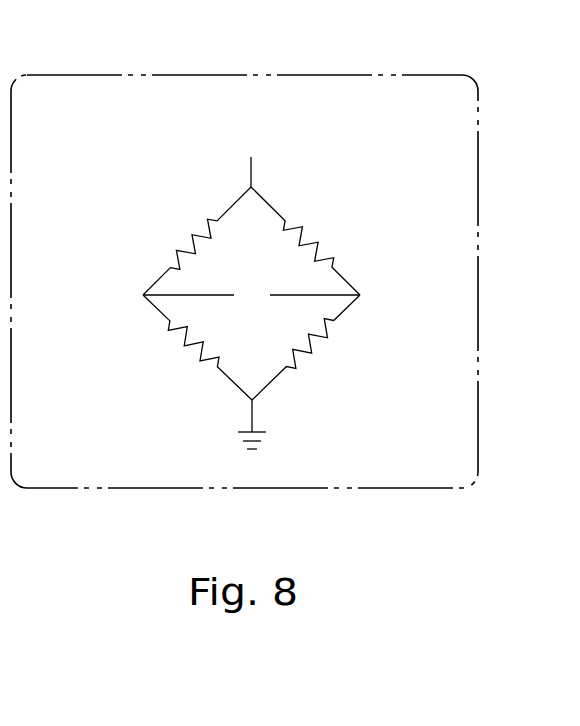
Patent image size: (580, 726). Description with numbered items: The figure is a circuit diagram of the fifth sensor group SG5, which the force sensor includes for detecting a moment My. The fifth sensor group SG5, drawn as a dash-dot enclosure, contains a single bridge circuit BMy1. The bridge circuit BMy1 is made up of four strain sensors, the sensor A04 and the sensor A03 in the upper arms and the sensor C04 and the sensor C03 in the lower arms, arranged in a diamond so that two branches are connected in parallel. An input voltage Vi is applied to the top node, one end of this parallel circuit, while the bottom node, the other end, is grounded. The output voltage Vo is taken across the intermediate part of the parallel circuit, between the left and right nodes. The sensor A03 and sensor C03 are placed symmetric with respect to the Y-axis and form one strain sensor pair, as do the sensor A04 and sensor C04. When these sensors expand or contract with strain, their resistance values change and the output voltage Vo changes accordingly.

The fifth sensor group SG5 is at (124, 75).
The bridge circuit BMy1 is at (134, 162).
The input voltage Vi is at (250, 151).
The output voltage Vo is at (251, 295).
The sensor A04 is at (191, 241).
The sensor A03 is at (307, 241).
The sensor C04 is at (192, 347).
The sensor C03 is at (307, 347).